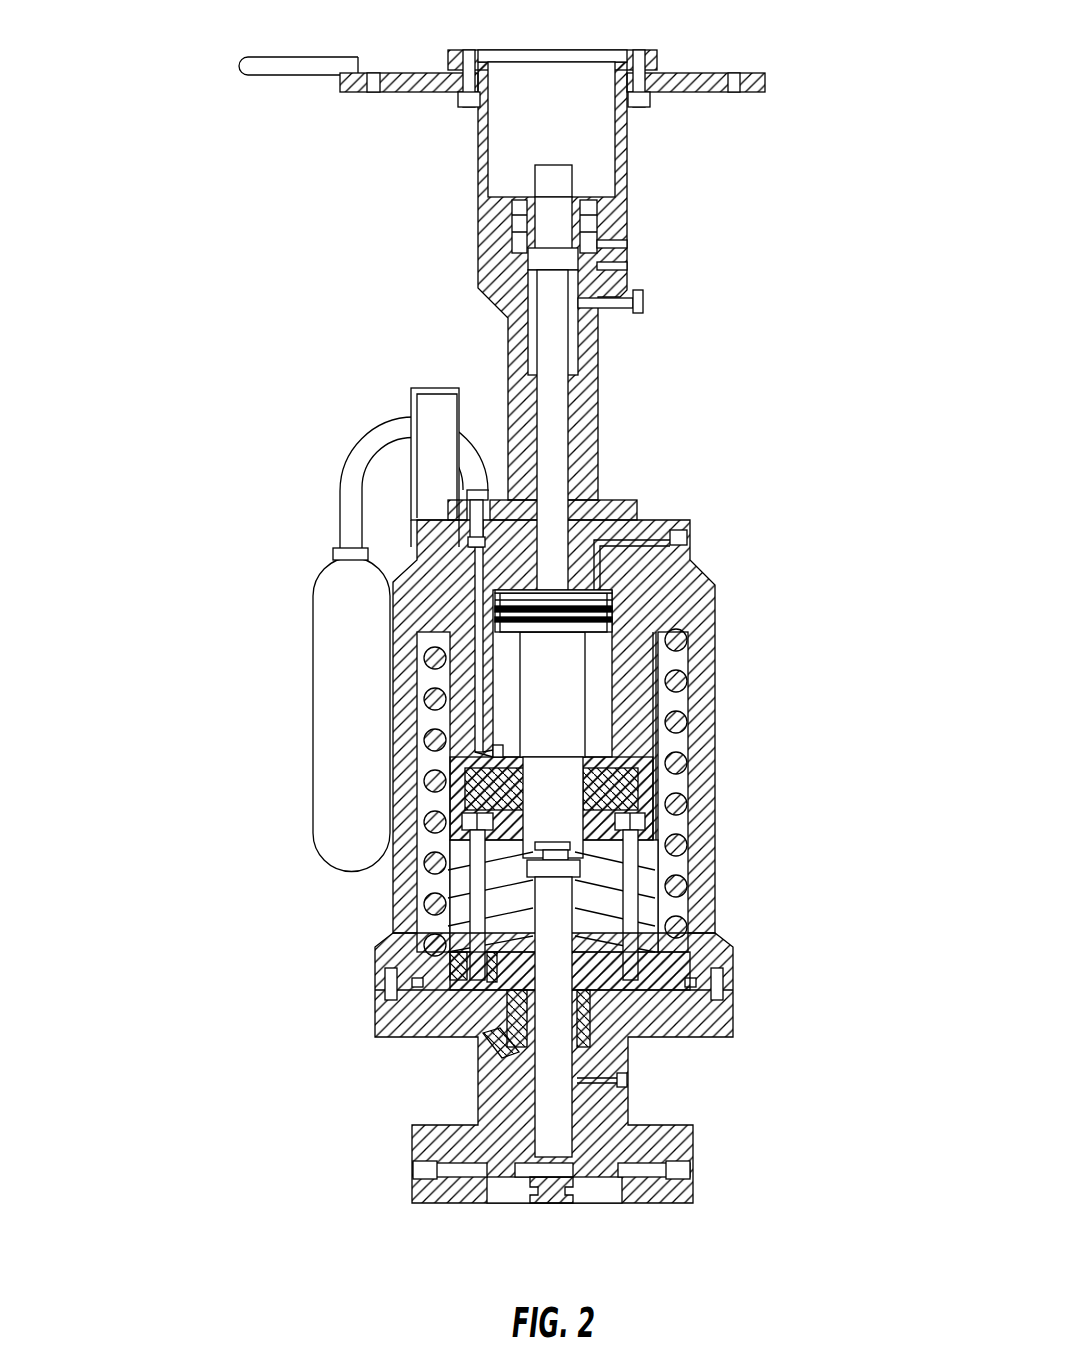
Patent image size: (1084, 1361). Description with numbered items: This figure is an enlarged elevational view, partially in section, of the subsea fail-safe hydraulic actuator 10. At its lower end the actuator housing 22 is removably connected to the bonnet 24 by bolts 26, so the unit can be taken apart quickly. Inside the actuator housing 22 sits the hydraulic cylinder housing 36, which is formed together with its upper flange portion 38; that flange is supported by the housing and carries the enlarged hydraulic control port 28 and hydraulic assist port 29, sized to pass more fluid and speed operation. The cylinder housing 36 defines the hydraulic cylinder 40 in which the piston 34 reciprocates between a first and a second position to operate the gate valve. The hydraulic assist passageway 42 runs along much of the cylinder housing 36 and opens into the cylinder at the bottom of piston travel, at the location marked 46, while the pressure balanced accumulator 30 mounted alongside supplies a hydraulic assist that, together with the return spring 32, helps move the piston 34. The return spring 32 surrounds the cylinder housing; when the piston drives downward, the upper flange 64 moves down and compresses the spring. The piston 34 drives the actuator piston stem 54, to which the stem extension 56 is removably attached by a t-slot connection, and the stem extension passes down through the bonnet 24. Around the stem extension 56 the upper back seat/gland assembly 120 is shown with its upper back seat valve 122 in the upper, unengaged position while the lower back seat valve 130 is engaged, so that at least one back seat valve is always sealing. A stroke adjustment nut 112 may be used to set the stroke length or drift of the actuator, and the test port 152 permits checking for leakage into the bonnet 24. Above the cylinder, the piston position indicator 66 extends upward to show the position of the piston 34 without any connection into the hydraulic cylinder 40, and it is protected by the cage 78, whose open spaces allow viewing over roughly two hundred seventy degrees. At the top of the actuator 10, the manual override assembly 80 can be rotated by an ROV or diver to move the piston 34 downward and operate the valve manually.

The actuator 10 is at (279, 1098).
The actuator housing 22 is at (715, 585).
The bonnet 24 is at (630, 1136).
The bolts 26 is at (378, 978).
The hydraulic control port 28 is at (683, 538).
The hydraulic assist port 29 is at (476, 522).
The pressure balanced accumulator 30 is at (336, 621).
The return spring 32 is at (681, 759).
The piston 34 is at (612, 626).
The hydraulic cylinder housing 36 is at (633, 582).
The upper flange portion 38 is at (650, 518).
The hydraulic cylinder 40 is at (505, 688).
The hydraulic assist passageway 42 is at (475, 630).
The assist passageway port 46 is at (494, 751).
The actuator piston stem 54 is at (555, 710).
The stem extension 56 is at (563, 920).
The upper flange 64 is at (612, 615).
The piston position indicator 66 is at (433, 441).
The cage 78 is at (430, 388).
The manual override assembly 80 is at (678, 207).
The stroke adjustment nut 112 is at (587, 968).
The upper back seat/gland assembly 120 is at (487, 1038).
The upper back seat valve 122 is at (530, 863).
The lower back seat valve 130 is at (537, 1173).
The test port 152 is at (627, 1080).